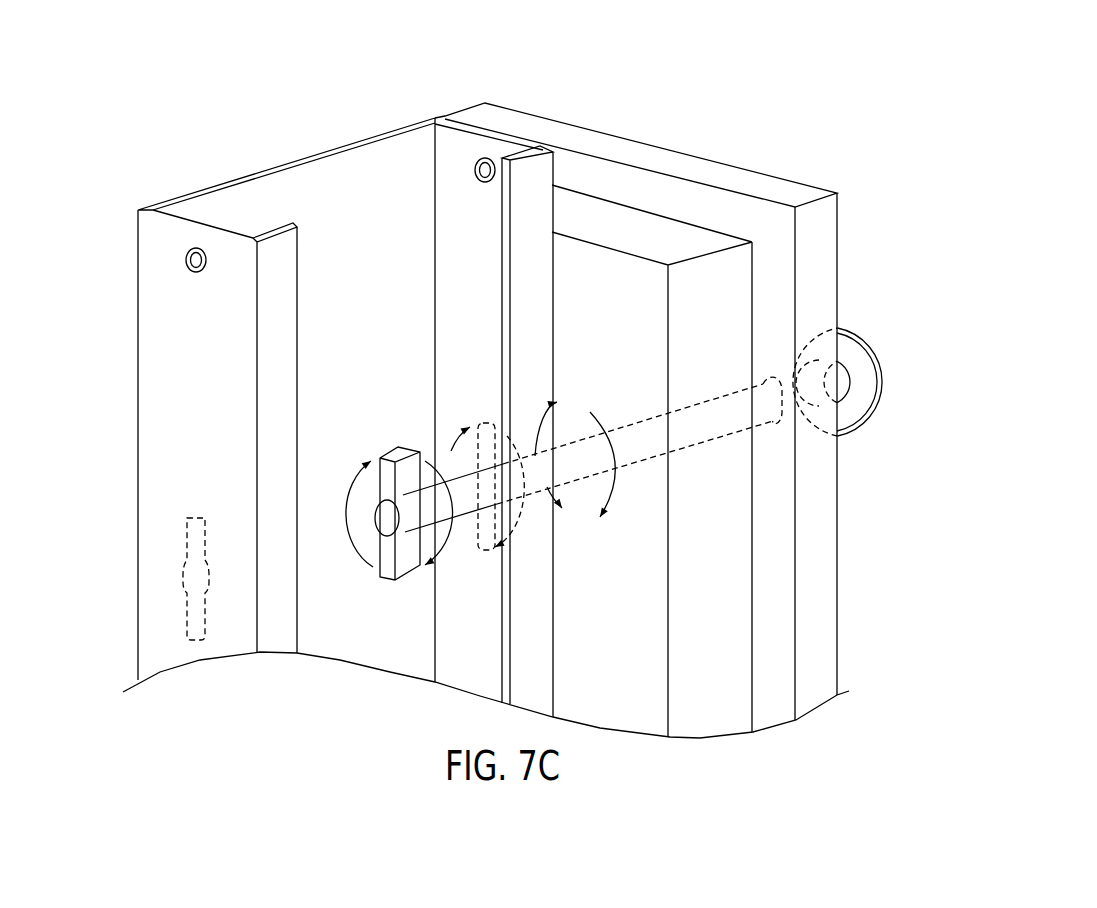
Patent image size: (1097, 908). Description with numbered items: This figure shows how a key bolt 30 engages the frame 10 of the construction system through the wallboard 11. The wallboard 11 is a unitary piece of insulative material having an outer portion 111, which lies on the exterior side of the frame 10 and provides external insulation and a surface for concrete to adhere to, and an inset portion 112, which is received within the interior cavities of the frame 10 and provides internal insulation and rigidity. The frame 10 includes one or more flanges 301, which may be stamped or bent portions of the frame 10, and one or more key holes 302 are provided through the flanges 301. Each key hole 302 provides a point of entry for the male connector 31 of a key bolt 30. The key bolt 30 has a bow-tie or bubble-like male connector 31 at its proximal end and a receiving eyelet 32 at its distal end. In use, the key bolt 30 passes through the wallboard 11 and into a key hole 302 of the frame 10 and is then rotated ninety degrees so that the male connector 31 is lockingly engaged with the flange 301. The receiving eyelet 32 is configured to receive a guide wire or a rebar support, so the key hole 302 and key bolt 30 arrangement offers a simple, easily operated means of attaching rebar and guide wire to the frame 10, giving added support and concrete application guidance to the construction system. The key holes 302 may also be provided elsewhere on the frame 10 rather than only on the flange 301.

The frame 10 is at (300, 142).
The wallboard 11 is at (636, 379).
The outer portion 111 is at (727, 174).
The inset portion 112 is at (633, 236).
The flange 301 is at (466, 148).
The key hole 302 is at (485, 423).
The key bolt 30 is at (630, 407).
The male connector 31 is at (395, 428).
The receiving eyelet 32 is at (843, 361).